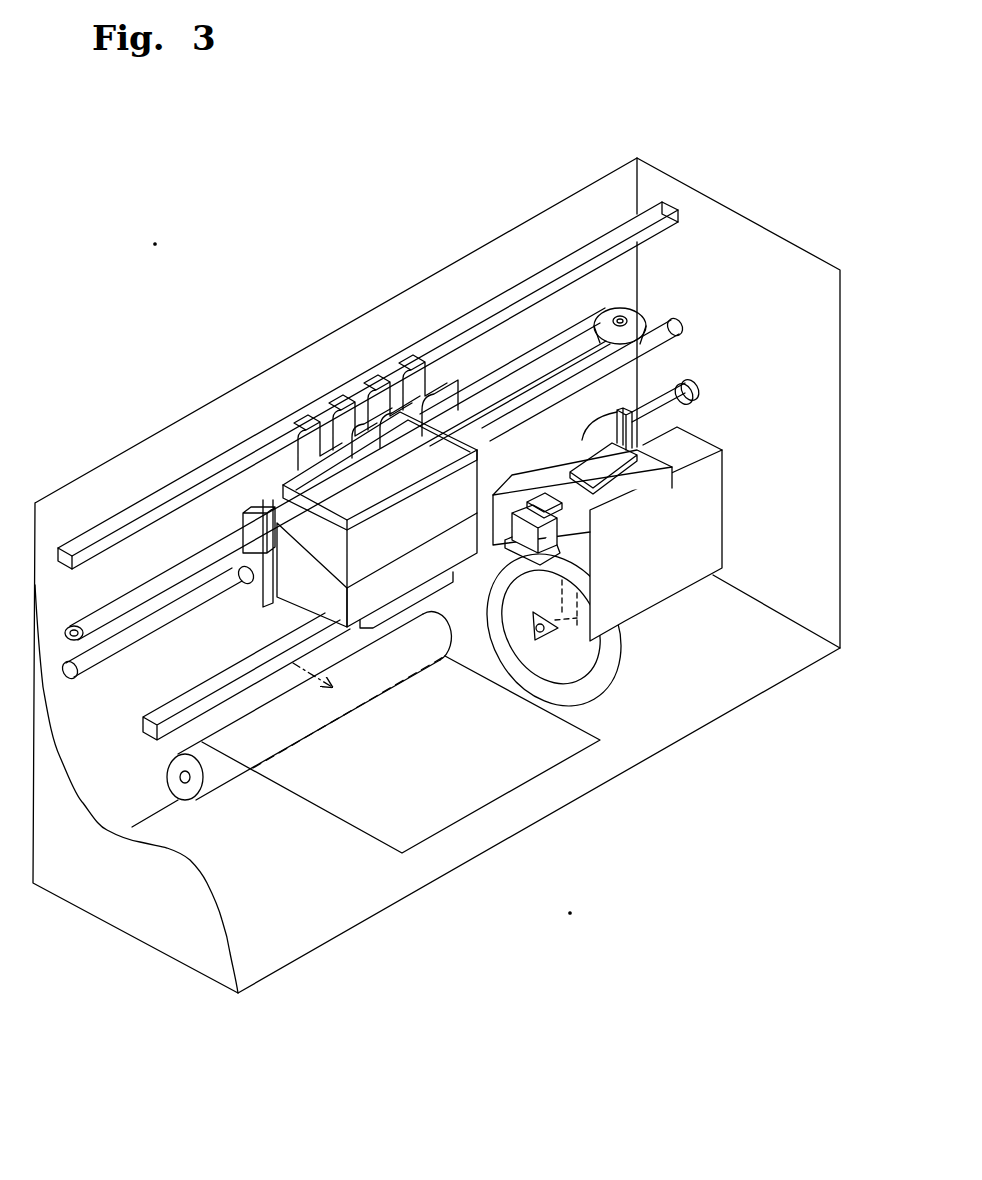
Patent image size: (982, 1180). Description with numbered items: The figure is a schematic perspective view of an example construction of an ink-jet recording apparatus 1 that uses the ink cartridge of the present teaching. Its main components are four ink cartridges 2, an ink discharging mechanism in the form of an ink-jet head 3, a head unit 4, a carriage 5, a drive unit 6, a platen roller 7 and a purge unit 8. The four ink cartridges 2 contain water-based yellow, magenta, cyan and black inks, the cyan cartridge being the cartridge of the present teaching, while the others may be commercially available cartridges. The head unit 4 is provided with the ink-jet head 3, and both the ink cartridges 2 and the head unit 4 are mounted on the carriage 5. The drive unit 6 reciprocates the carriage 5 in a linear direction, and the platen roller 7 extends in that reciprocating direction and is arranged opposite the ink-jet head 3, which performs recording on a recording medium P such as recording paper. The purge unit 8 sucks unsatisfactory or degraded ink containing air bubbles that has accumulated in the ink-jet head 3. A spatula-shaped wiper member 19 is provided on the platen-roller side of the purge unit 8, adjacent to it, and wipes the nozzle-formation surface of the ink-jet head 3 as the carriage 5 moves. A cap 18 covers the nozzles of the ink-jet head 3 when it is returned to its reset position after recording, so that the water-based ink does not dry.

The ink-jet recording apparatus 1 is at (334, 189).
The ink cartridges 2 is at (382, 406).
The ink-jet head 3 is at (428, 588).
The head unit 4 is at (303, 616).
The carriage 5 is at (262, 483).
The drive unit 6 is at (662, 185).
The platen roller 7 is at (222, 768).
The purge unit 8 is at (787, 555).
The cap 18 is at (652, 440).
The wiper member 19 is at (530, 535).
The recording medium P is at (387, 827).